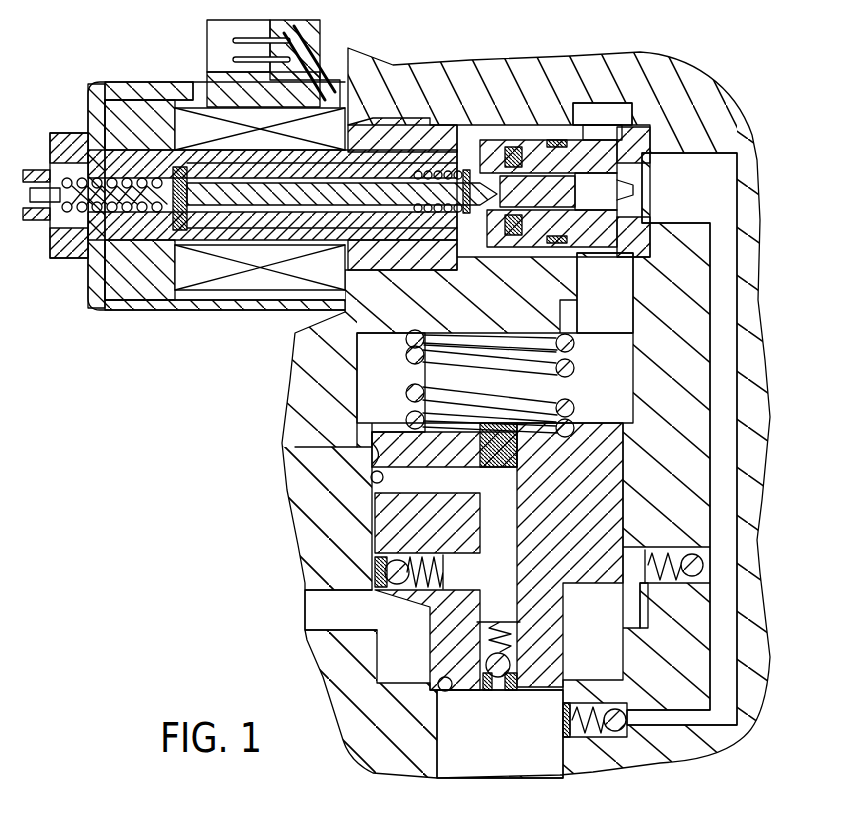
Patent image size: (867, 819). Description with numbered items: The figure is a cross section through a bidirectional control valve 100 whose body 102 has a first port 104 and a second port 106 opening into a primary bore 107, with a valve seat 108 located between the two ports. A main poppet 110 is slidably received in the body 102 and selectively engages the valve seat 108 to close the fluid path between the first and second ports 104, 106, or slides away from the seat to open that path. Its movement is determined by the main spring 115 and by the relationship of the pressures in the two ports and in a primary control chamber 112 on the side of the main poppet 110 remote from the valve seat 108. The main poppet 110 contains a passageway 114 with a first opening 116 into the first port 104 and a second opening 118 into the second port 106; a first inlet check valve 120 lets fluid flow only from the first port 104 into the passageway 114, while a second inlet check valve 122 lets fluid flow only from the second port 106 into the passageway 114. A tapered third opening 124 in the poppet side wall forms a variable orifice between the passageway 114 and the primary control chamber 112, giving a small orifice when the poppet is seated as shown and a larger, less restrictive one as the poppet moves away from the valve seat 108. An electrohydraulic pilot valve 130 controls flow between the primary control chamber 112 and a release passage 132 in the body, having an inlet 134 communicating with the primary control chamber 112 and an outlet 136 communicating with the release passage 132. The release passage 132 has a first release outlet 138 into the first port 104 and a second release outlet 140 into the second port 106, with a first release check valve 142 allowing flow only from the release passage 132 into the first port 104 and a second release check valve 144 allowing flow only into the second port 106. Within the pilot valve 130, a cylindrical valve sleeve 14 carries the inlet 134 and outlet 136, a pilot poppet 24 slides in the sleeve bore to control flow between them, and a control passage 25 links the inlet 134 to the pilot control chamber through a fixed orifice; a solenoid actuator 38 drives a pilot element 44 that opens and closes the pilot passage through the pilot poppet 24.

The cylindrical valve sleeve 14 is at (557, 133).
The pilot poppet 24 is at (537, 160).
The control passage 25 is at (537, 227).
The solenoid actuator 38 is at (233, 275).
The pilot element 44 is at (410, 193).
The bidirectional control valve 100 is at (224, 566).
The body 102 is at (318, 360).
The first port 104 is at (497, 776).
The second port 106 is at (378, 622).
The primary bore 107 is at (300, 463).
The valve seat 108 is at (446, 688).
The main poppet 110 is at (360, 508).
The primary control chamber 112 is at (400, 392).
The passageway 114 is at (507, 581).
The main spring 115 is at (577, 370).
The first opening 116 is at (503, 683).
The second opening 118 is at (373, 568).
The first inlet check valve 120 is at (513, 663).
The second inlet check valve 122 is at (398, 590).
The third opening 124 is at (300, 427).
The electrohydraulic pilot valve 130 is at (134, 72).
The release passage 132 is at (727, 216).
The inlet 134 is at (588, 257).
The outlet 136 is at (642, 227).
The first release outlet 138 is at (563, 727).
The second release outlet 140 is at (647, 567).
The first release check valve 142 is at (615, 731).
The second release check valve 144 is at (707, 567).